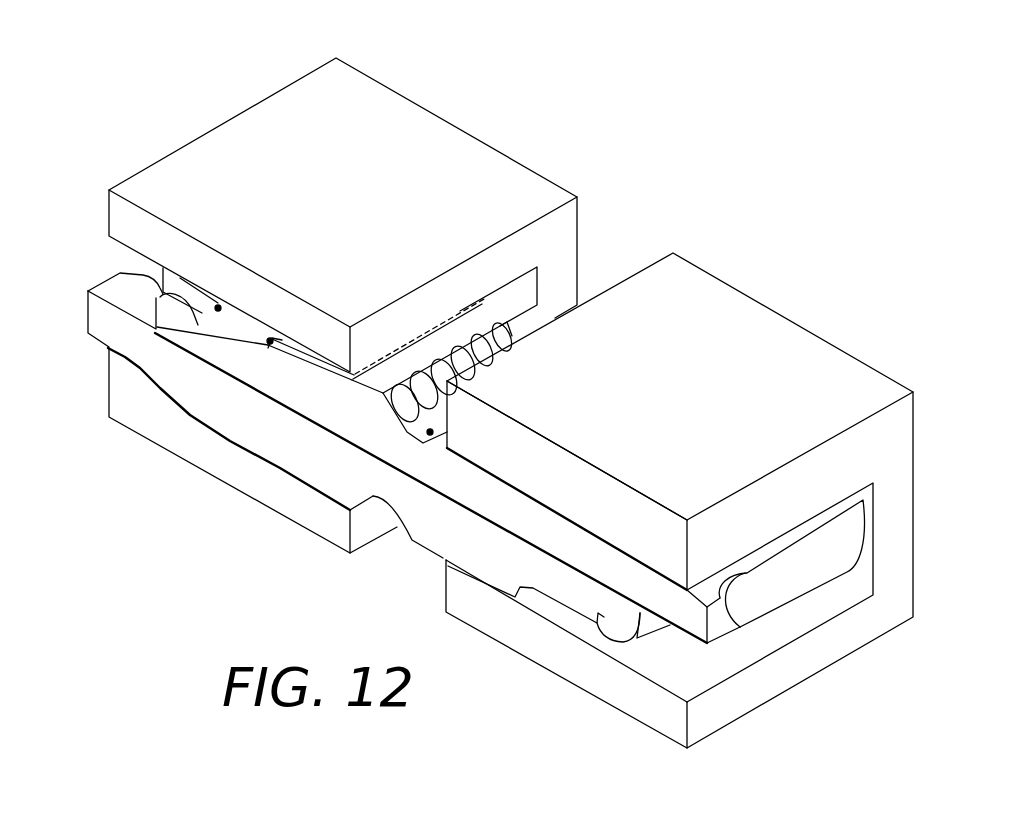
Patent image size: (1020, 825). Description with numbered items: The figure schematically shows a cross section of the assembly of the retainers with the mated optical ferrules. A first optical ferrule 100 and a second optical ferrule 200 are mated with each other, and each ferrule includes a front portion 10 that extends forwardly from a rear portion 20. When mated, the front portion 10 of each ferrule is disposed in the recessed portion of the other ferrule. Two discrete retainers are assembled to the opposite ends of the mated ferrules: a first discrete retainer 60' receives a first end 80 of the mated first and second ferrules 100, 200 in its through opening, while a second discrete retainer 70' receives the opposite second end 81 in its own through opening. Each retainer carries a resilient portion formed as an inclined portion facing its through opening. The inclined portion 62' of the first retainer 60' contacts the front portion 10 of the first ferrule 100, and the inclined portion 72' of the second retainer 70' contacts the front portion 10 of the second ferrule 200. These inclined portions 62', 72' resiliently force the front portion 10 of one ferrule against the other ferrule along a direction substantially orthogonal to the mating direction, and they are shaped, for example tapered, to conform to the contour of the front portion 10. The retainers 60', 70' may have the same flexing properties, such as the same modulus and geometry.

The front portion 10 is at (252, 429).
The rear portion 20 is at (318, 399).
The first optical ferrule 100 is at (481, 484).
The second optical ferrule 200 is at (359, 482).
The first discrete retainer 60' is at (679, 500).
The inclined portion 62' is at (570, 460).
The second discrete retainer 70' is at (343, 218).
The inclined portion 72' is at (263, 453).
The first end 80 is at (808, 568).
The second end 81 is at (78, 311).